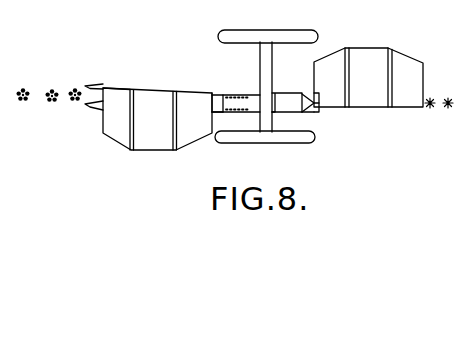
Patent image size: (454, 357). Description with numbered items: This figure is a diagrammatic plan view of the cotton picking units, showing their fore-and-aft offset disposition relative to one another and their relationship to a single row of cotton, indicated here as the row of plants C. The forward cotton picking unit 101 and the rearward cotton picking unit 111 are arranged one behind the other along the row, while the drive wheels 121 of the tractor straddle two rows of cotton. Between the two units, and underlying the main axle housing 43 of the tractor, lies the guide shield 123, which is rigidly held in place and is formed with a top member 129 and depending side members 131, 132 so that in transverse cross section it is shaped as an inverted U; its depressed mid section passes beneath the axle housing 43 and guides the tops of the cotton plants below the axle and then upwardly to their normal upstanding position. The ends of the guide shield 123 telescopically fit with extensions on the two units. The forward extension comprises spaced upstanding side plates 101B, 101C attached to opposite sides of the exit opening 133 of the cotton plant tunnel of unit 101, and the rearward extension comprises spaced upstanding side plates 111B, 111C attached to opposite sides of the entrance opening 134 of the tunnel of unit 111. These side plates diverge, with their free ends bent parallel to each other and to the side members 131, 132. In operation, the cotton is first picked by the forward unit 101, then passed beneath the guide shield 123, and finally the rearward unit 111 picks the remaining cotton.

The forward cotton picking unit 101 is at (148, 117).
The side plate 101B is at (217, 95).
The side plate 101C is at (217, 103).
The rearward cotton picking unit 111 is at (368, 77).
The side plate 111B is at (312, 106).
The side plate 111C is at (303, 112).
The drive wheels 121 is at (248, 35).
The main axle housing 43 is at (272, 63).
The guide shield 123 is at (281, 93).
The top member 129 is at (217, 103).
The side member 131 is at (256, 93).
The side member 132 is at (275, 112).
The exit opening 133 is at (207, 92).
The entrance opening 134 is at (318, 104).
The flowers C is at (48, 101).